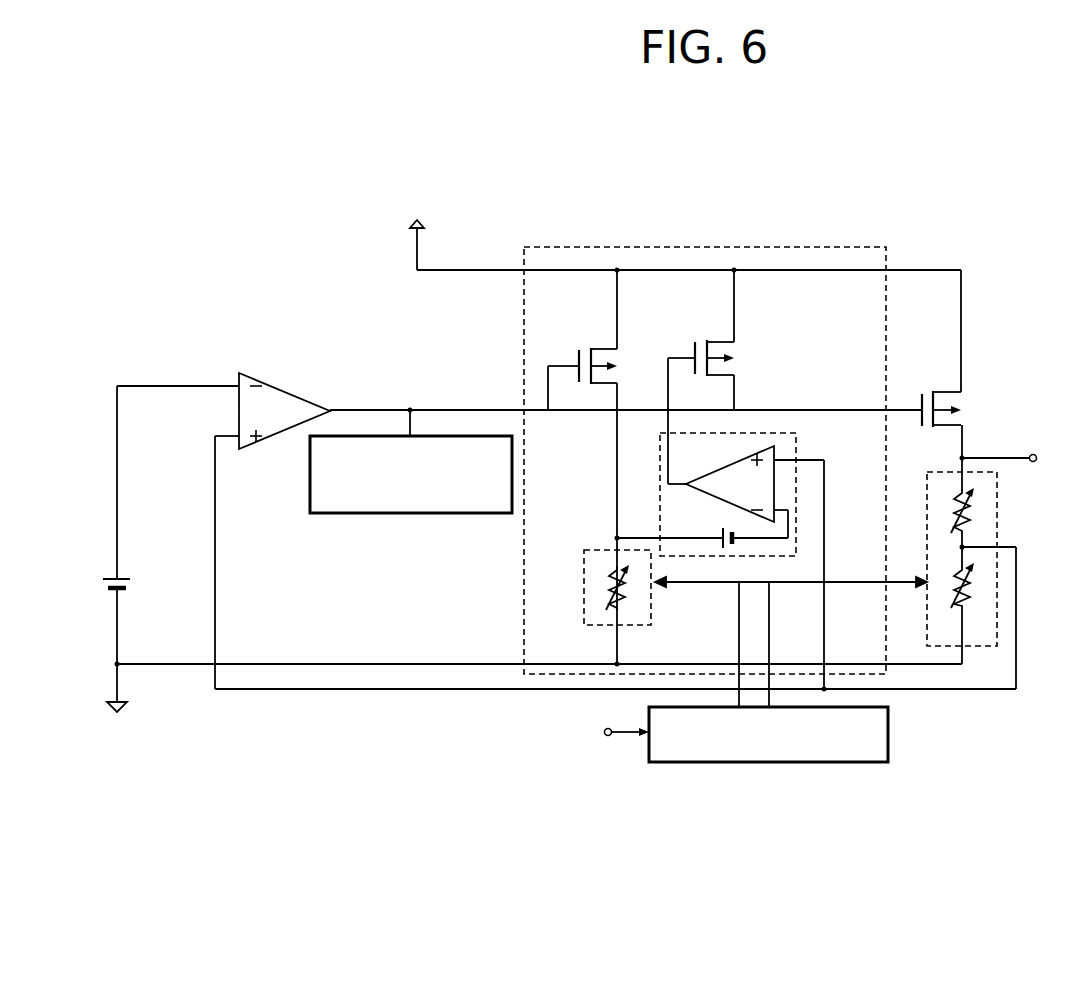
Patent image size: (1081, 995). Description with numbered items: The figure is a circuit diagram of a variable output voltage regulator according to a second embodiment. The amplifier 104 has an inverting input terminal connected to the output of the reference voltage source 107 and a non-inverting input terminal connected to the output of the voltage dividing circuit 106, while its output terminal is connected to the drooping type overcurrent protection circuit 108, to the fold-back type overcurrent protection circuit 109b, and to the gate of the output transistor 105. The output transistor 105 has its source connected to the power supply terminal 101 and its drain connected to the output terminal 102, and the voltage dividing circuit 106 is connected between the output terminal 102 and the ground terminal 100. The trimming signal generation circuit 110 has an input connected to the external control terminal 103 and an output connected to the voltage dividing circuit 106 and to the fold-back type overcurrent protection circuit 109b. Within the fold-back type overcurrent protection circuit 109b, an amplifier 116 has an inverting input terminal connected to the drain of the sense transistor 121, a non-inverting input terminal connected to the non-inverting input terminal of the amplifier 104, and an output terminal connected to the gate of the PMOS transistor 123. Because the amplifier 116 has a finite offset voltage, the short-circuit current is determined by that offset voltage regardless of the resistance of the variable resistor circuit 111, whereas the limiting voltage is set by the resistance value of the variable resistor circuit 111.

The ground terminal 100 is at (132, 725).
The power supply terminal 101 is at (449, 223).
The output terminal 102 is at (1007, 446).
The external control terminal 103 is at (600, 732).
The amplifier 104 is at (280, 383).
The output transistor 105 is at (971, 396).
The voltage dividing circuit 106 is at (1007, 610).
The reference voltage source 107 is at (107, 568).
The drooping type overcurrent protection circuit 108 is at (398, 515).
The fold-back type overcurrent protection circuit 109b is at (522, 532).
The trimming signal generation circuit 110 is at (893, 747).
The variable resistor circuit 111 is at (607, 547).
The amplifier 116 is at (798, 472).
The sense transistor 121 is at (607, 346).
The PMOS transistor 123 is at (738, 355).